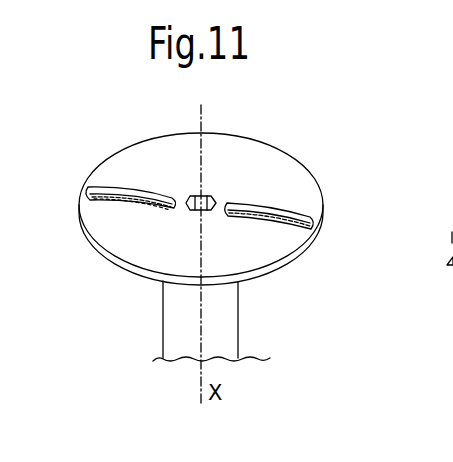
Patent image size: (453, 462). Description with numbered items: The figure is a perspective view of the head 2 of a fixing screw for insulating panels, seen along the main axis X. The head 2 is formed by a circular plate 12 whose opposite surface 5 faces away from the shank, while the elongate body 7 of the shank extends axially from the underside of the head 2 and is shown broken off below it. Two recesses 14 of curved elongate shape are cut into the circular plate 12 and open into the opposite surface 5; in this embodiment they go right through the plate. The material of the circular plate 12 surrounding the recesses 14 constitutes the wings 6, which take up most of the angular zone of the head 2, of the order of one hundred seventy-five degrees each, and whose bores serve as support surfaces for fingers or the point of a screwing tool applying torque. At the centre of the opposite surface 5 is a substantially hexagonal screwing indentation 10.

The head 2 is at (298, 113).
The opposite surface 5 is at (179, 255).
The drive wing 6 is at (226, 153).
The elongate body 7 is at (227, 330).
The screwing indentation 10 is at (205, 213).
The circular plate 12 is at (122, 263).
The recess 14 is at (143, 188).